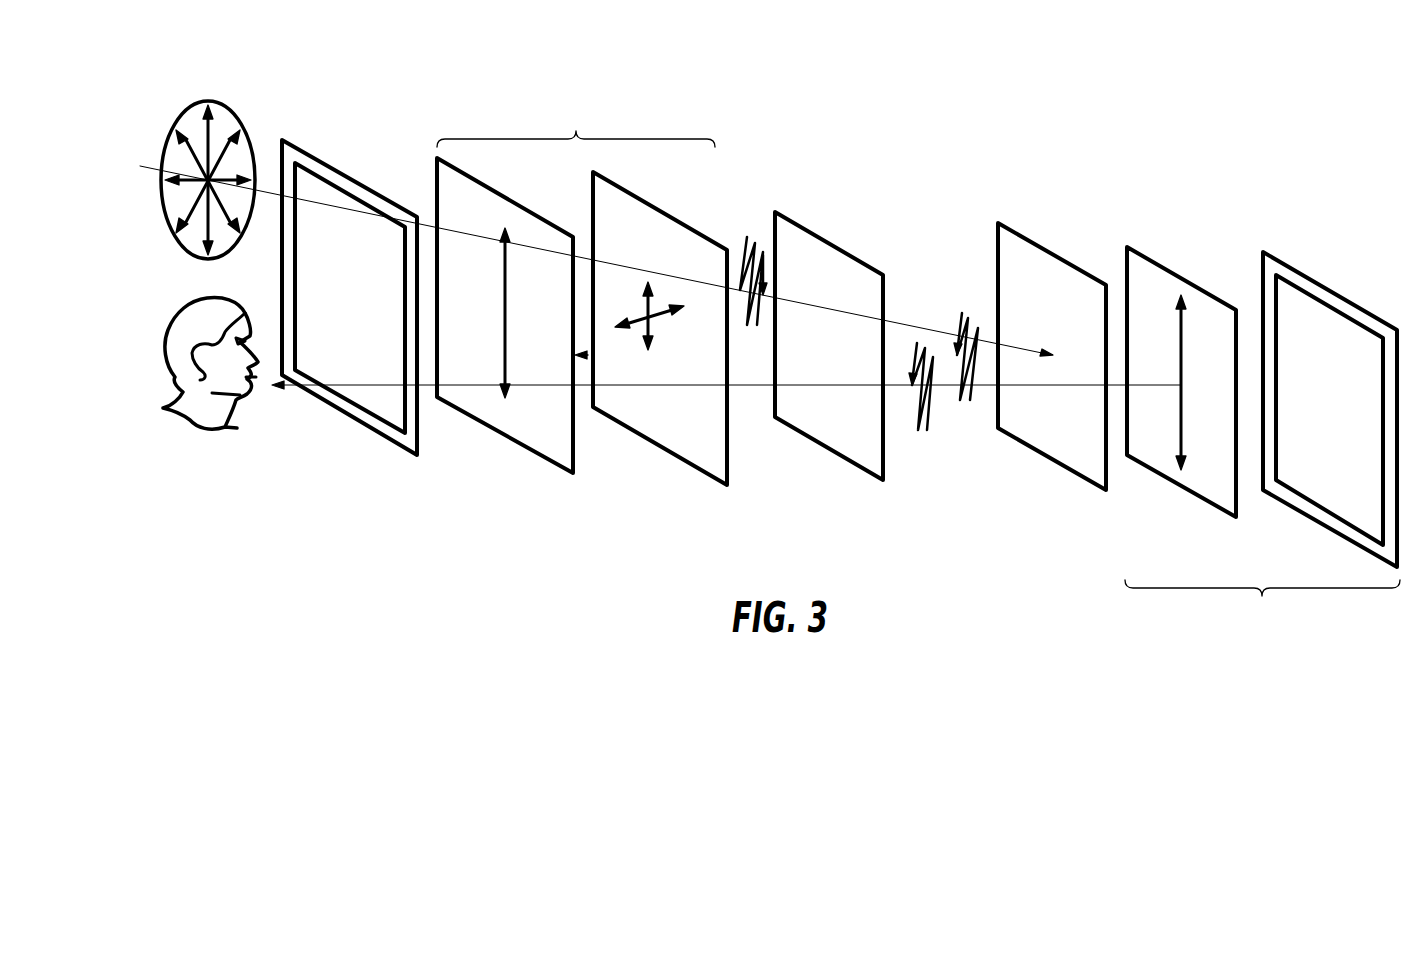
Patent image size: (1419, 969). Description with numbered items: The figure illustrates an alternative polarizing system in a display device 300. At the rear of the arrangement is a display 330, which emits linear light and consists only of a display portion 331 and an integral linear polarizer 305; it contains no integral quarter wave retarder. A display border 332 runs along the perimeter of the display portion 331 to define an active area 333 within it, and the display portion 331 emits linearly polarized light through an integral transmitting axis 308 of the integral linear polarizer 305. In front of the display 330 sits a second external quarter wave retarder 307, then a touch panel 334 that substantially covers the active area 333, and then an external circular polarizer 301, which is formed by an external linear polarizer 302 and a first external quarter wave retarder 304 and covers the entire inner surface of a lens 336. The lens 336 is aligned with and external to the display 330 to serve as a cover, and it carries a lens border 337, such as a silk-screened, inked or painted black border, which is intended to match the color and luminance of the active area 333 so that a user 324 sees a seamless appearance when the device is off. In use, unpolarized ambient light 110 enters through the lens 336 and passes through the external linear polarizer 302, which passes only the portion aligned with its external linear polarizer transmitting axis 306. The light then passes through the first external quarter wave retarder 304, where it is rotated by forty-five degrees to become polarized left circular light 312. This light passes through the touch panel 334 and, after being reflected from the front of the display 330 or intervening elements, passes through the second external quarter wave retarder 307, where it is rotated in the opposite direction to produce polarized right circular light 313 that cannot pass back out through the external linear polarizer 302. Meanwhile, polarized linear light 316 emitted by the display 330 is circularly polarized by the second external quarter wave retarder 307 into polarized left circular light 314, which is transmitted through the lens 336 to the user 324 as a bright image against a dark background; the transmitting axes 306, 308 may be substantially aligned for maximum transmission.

The display device 300 is at (1238, 72).
The unpolarized ambient light 110 is at (190, 104).
The user 324 is at (193, 307).
The lens 336 is at (349, 297).
The lens border 337 is at (345, 408).
The external circular polarizer 301 is at (576, 126).
The external linear polarizer 302 is at (508, 338).
The external linear polarizer transmitting axis 306 is at (505, 312).
The first external quarter wave retarder 304 is at (638, 195).
The polarized left circular light 312 is at (746, 252).
The touch panel 334 is at (832, 359).
The polarized linear light 316 is at (818, 385).
The polarized right circular light 313 is at (918, 421).
The polarized left circular light 314 is at (957, 332).
The second external quarter wave retarder 307 is at (1056, 251).
The integral linear polarizer 305 is at (1192, 409).
The integral transmitting axis 308 is at (1181, 347).
The display 330 is at (1262, 438).
The display portion 331 is at (1330, 409).
The display border 332 is at (1328, 520).
The active area 333 is at (1303, 484).